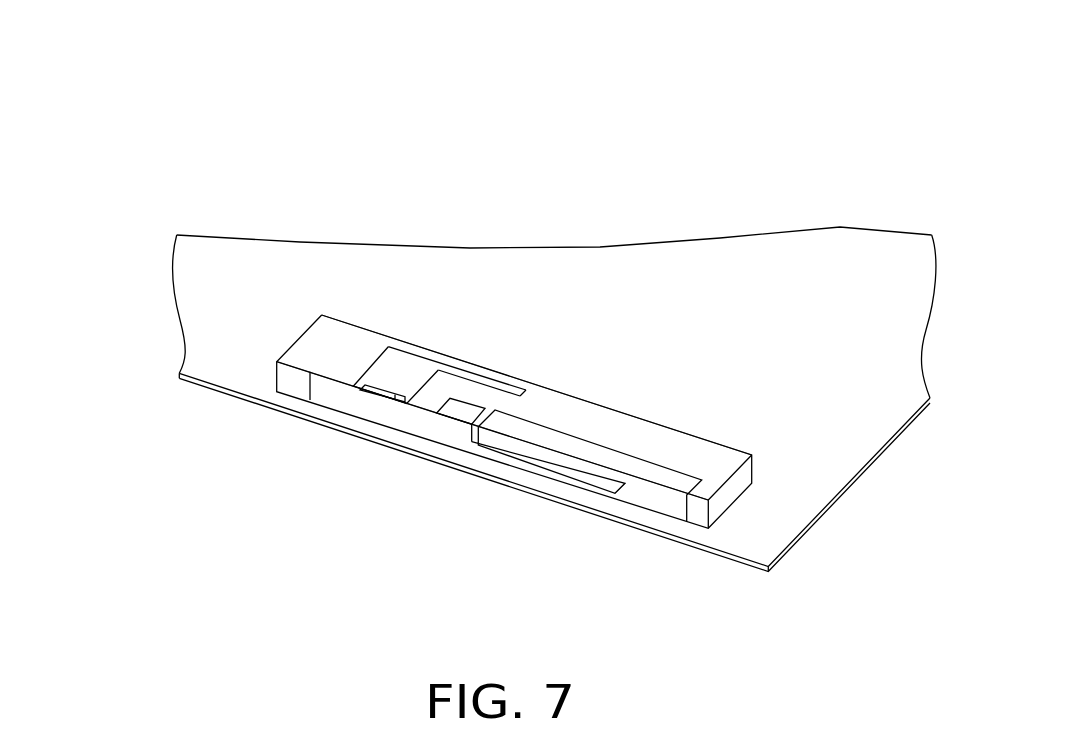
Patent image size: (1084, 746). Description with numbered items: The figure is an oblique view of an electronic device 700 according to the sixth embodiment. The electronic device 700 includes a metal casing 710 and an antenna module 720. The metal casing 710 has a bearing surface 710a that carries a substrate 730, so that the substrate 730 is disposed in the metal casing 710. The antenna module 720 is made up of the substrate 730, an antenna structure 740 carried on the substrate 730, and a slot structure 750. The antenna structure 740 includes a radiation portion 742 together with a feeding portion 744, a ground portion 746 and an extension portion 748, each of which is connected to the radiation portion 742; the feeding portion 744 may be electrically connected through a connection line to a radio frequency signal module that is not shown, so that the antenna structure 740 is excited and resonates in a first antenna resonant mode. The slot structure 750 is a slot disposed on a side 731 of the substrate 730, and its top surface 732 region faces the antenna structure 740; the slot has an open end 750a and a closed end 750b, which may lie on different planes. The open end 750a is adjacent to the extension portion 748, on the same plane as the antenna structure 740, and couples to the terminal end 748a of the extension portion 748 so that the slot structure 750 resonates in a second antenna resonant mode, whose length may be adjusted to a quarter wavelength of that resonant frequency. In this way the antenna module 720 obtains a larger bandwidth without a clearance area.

The electronic device 700 is at (916, 602).
The metal casing 710 is at (177, 376).
The bearing surface 710a is at (207, 310).
The antenna module 720 is at (873, 10).
The substrate 730 is at (733, 492).
The side 731 is at (292, 378).
The top surface of carrier 732 is at (313, 347).
The antenna structure 740 is at (128, 8).
The radiation portion 742 is at (400, 366).
The feeding portion 744 is at (462, 405).
The ground portion 746 is at (385, 393).
The extension portion 748 is at (465, 372).
The terminal end 748a is at (522, 390).
The slot structure 750 is at (520, 453).
The open end 750a is at (478, 427).
The closed end 750b is at (620, 491).